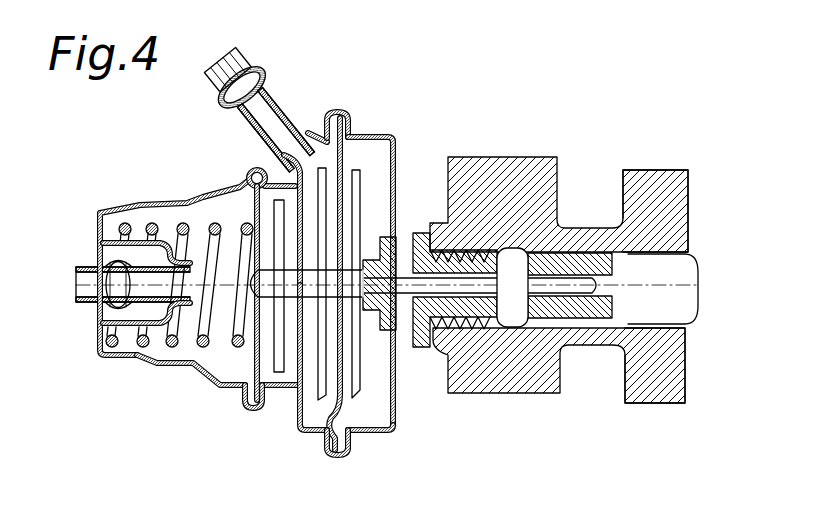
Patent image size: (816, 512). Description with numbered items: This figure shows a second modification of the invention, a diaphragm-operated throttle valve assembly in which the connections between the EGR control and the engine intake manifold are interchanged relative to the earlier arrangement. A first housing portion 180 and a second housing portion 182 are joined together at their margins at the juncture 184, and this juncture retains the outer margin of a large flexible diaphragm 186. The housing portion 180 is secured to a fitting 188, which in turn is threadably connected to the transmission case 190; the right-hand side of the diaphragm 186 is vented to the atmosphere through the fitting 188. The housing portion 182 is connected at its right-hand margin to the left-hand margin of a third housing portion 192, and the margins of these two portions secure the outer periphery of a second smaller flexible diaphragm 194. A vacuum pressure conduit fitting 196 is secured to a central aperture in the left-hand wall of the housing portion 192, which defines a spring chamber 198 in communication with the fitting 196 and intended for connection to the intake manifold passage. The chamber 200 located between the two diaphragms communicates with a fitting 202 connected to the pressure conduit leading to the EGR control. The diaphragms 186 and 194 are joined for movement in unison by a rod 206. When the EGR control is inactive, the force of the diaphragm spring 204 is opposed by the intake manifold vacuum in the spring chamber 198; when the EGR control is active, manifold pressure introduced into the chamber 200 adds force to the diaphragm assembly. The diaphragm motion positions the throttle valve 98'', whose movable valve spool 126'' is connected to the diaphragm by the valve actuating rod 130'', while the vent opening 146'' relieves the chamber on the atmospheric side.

The vacuum pressure conduit fitting 196 is at (85, 267).
The spring chamber 198 is at (158, 358).
The diaphragm spring 204 is at (192, 198).
The third housing portion 192 is at (203, 375).
The second smaller flexible diaphragm 194 is at (228, 386).
The fitting 202 is at (243, 62).
The first housing portion 180 is at (372, 148).
The juncture of housing portions 184 is at (338, 115).
The large flexible diaphragm 186 is at (393, 165).
The second housing portion 182 is at (298, 432).
The chamber 200 is at (310, 412).
The rod 206 is at (302, 268).
The fitting 188 is at (428, 340).
The transmission case 190 is at (502, 167).
The throttle valve 98'' is at (660, 220).
The movable valve spool 126'' is at (647, 386).
The valve actuating rod 130'' is at (554, 341).
The opening 146'' is at (518, 352).